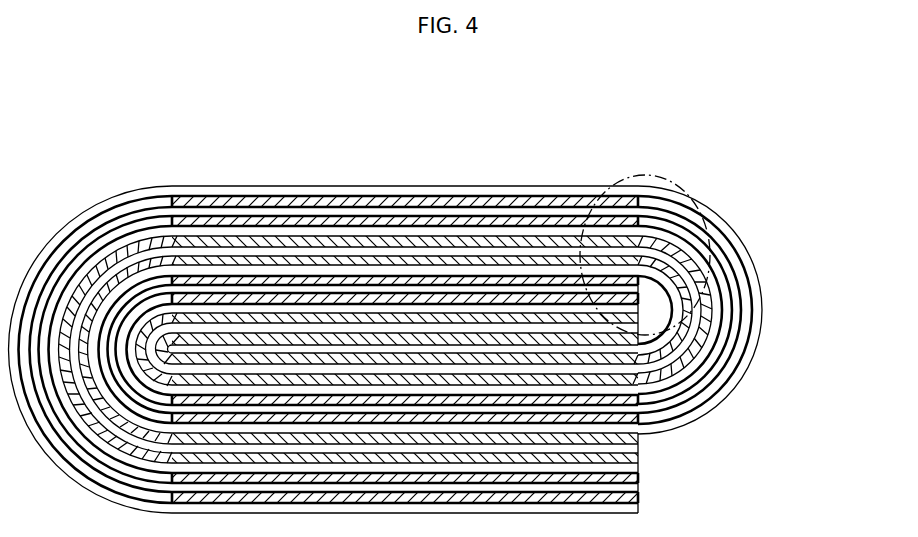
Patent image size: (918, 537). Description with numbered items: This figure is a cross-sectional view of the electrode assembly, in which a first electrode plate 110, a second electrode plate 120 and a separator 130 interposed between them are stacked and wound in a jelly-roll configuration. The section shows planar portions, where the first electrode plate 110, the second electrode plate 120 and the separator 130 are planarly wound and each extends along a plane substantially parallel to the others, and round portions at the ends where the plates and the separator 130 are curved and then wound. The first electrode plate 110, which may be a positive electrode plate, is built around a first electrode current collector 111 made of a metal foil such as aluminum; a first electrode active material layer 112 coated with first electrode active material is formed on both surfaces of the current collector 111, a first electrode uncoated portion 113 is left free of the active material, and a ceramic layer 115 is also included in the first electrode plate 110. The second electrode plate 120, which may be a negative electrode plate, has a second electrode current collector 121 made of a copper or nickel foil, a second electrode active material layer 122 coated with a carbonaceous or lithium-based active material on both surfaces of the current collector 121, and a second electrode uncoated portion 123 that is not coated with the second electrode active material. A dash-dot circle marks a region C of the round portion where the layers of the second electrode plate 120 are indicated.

The first electrode plate 110 is at (255, 114).
The first electrode current collector 111 is at (191, 298).
The first electrode active material layer 112 is at (245, 283).
The first electrode uncoated portion 113 is at (137, 245).
The ceramic layer 115 is at (87, 262).
The second electrode plate 120 is at (836, 318).
The second electrode current collector 121 is at (632, 330).
The second electrode active material layer 122 is at (640, 398).
The second electrode uncoated portion 123 is at (650, 365).
The separator 130 is at (637, 508).
The region C is at (690, 162).